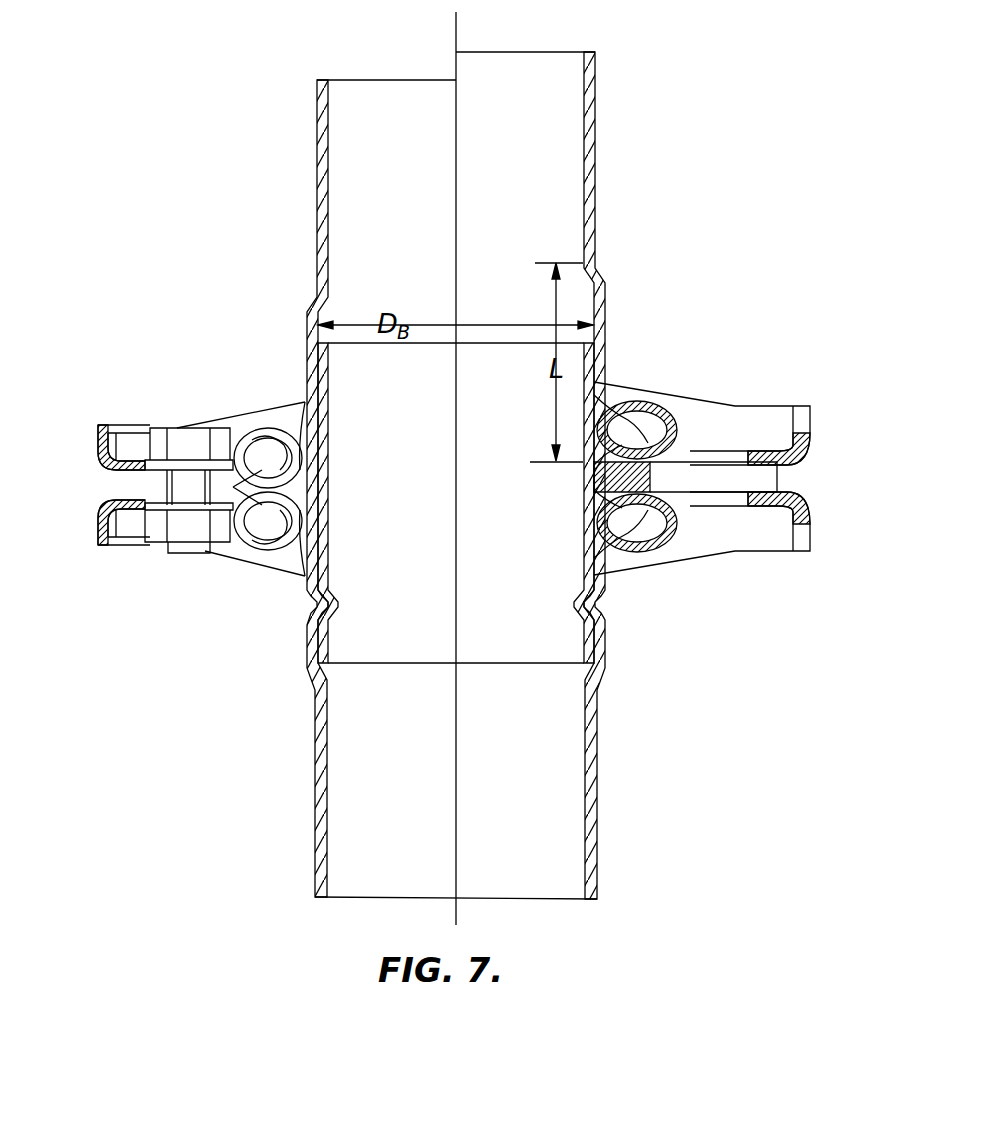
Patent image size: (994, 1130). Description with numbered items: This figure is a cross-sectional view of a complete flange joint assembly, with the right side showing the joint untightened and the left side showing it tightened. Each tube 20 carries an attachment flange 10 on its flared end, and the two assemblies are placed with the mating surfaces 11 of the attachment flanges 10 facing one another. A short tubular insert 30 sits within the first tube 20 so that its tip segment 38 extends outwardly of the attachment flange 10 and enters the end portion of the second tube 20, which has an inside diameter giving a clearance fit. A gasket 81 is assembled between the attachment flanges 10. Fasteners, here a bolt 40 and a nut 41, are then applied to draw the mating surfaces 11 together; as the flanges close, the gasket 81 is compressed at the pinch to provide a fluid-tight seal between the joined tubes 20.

The attachment flange 10 is at (810, 433).
The mating surfaces 11 is at (777, 467).
The tube 20 is at (597, 108).
The tubular insert 30 is at (328, 487).
The tip segment 38 is at (481, 343).
The bolt 40 is at (182, 443).
The nut 41 is at (157, 528).
The gasket 81 is at (583, 473).